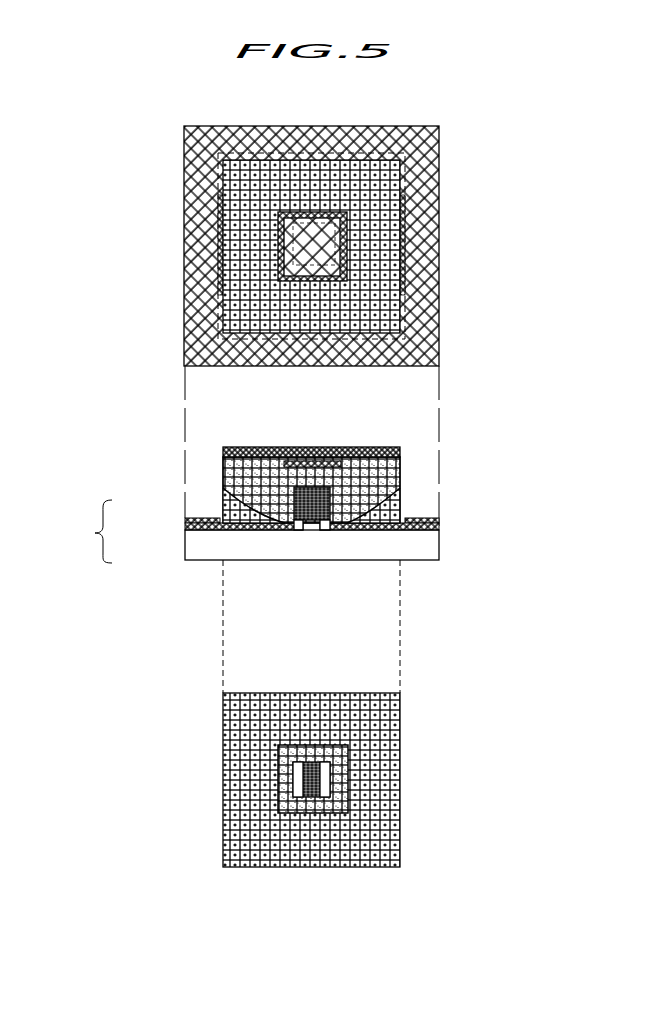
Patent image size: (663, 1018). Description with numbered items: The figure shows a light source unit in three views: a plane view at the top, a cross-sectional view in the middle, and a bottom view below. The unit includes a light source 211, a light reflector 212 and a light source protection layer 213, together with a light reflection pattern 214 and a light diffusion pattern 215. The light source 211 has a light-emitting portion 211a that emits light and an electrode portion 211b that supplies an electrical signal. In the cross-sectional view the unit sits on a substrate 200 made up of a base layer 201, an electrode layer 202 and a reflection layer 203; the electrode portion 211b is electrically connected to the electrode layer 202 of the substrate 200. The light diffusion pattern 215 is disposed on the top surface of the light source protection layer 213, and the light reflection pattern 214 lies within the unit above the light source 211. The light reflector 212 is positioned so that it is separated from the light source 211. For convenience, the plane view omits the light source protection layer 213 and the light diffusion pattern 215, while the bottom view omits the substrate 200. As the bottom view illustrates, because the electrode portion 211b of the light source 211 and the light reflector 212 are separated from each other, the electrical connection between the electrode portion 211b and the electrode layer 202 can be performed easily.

The substrate 200 is at (85, 531).
The base layer 201 is at (190, 545).
The electrode layer 202 is at (280, 267).
The reflection layer 203 is at (427, 170).
The light source 211 is at (347, 250).
The light-emitting portion 211a is at (306, 530).
The electrode portion 211b is at (322, 530).
The light reflector 212 is at (383, 207).
The light source protection layer 213 is at (388, 478).
The light reflection pattern 214 is at (345, 232).
The light diffusion pattern 215 is at (400, 452).